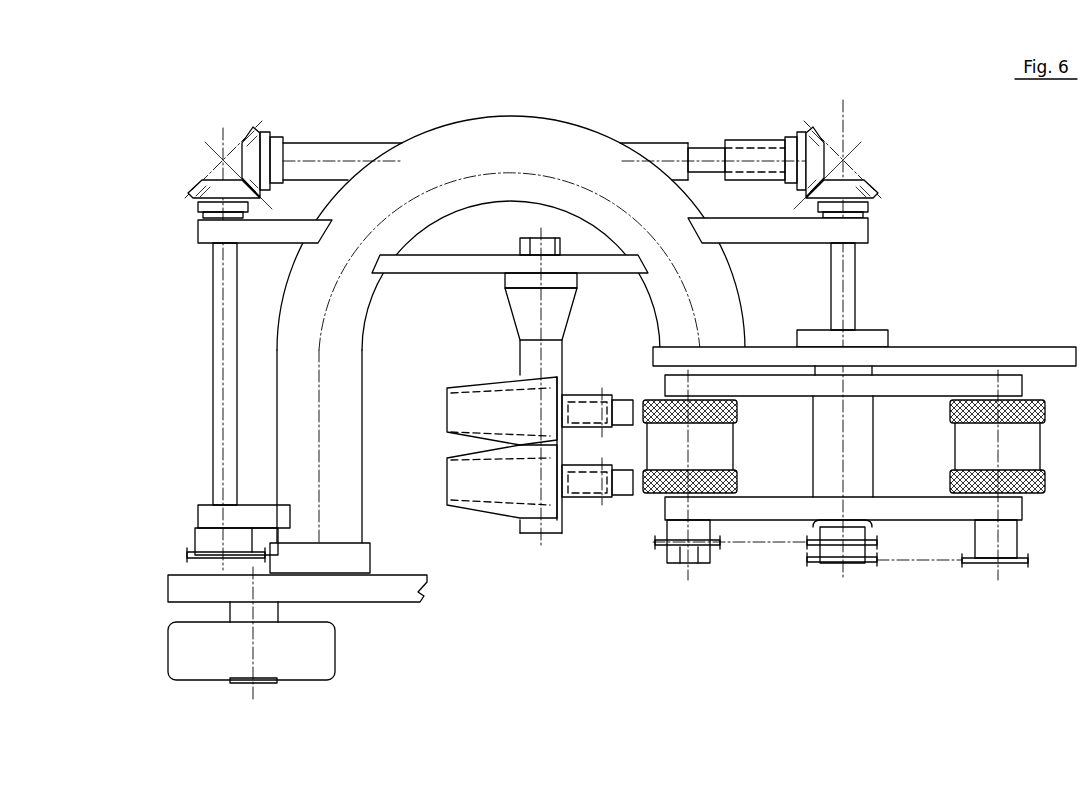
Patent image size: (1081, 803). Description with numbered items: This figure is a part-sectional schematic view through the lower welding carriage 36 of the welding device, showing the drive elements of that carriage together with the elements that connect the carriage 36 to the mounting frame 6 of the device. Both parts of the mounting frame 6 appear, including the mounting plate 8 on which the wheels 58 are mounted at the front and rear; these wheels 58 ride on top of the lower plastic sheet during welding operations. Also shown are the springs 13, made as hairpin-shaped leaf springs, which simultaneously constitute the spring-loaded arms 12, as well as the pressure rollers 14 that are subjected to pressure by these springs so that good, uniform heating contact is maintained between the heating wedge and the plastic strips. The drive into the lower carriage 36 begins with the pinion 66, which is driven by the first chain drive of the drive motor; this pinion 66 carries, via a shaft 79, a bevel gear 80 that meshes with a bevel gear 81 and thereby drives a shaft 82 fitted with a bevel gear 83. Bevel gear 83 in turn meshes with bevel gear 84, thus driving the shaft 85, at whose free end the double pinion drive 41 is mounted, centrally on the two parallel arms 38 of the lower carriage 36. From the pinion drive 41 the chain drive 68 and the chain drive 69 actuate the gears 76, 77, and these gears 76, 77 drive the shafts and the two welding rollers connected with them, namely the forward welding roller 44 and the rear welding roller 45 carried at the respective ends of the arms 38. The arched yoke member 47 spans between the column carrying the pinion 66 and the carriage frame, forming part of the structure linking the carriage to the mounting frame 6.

The mounting frame 6 is at (479, 283).
The mounting plate 8 is at (195, 589).
The spring-loaded arms 12 is at (460, 413).
The leaf springs 13 is at (497, 482).
The pressure rollers 14 is at (623, 413).
The lower welding carriage 36 is at (778, 680).
The parallel arms 38 is at (932, 386).
The double pinion drive 41 is at (853, 530).
The forward welding roller 44 is at (737, 473).
The rear welding roller 45 is at (967, 485).
The arched yoke 47 is at (298, 420).
The wheels 58 is at (197, 652).
The pinion 66 is at (183, 555).
The chain drive 68 is at (735, 545).
The chain drive 69 is at (938, 560).
The gear 76 is at (682, 565).
The gear 77 is at (1008, 563).
The shaft 79 is at (222, 320).
The bevel gear 80 is at (188, 186).
The bevel gear 81 is at (248, 126).
The shaft 82 is at (703, 148).
The bevel gear 83 is at (812, 126).
The bevel gear 84 is at (878, 186).
The shaft 85 is at (847, 254).